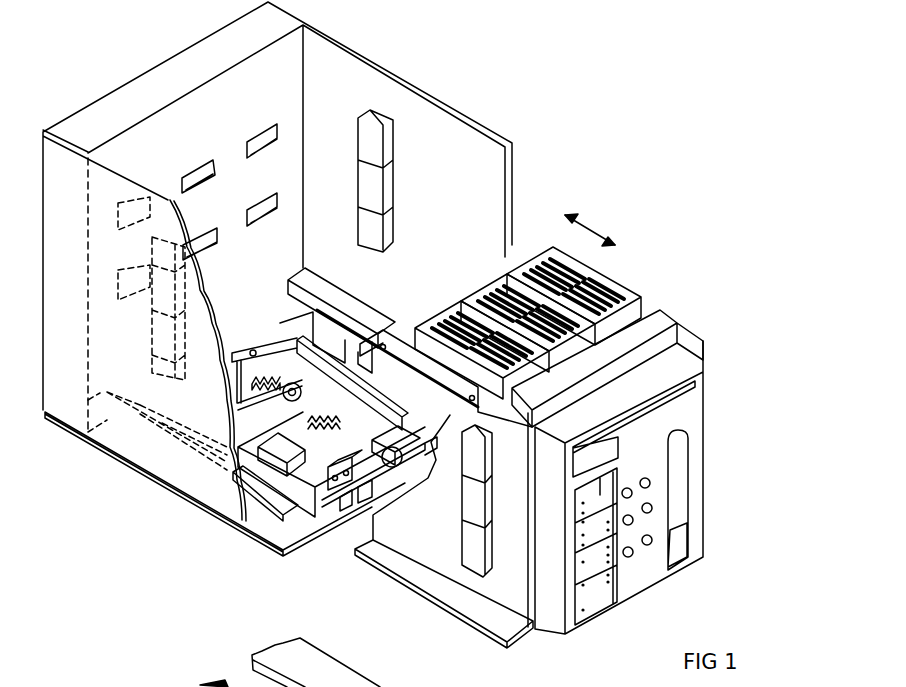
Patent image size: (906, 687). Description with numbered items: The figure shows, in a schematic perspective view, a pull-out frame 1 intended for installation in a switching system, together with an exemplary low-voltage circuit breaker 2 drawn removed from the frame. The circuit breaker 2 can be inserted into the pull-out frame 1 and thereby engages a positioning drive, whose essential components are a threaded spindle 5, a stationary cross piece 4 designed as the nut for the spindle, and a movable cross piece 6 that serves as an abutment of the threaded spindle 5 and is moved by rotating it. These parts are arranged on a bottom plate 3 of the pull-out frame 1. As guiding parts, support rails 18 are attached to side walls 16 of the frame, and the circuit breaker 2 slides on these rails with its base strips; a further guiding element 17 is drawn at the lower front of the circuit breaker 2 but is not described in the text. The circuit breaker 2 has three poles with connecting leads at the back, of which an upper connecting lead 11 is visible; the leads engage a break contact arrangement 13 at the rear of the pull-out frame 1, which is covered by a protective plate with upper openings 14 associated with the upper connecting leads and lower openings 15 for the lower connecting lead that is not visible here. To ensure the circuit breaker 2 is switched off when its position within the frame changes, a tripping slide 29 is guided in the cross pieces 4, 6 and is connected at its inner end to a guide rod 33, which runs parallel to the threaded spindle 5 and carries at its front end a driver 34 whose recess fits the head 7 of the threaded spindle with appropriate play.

The pull-out frame 1 is at (119, 461).
The low-voltage circuit breaker 2 is at (546, 628).
The bottom plate 3 is at (288, 533).
The stationary cross piece 4 is at (345, 362).
The threaded spindle 5 is at (323, 435).
The movable cross piece 6 is at (314, 464).
The head of the threaded spindle 7 is at (405, 468).
The upper connecting lead 11 is at (367, 345).
The break contact arrangement 13 is at (199, 44).
The upper openings 14 is at (247, 146).
The lower openings 15 is at (205, 232).
The side walls 16 is at (452, 125).
The slide plate 17 is at (437, 587).
The support rails 18 is at (325, 288).
The tripping slide 29 is at (305, 358).
The guide rod 33 is at (417, 440).
The driver 34 is at (421, 472).